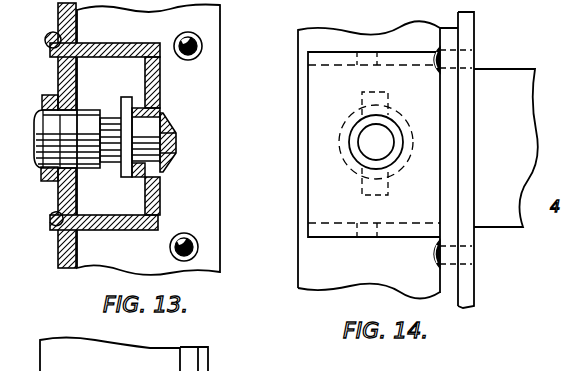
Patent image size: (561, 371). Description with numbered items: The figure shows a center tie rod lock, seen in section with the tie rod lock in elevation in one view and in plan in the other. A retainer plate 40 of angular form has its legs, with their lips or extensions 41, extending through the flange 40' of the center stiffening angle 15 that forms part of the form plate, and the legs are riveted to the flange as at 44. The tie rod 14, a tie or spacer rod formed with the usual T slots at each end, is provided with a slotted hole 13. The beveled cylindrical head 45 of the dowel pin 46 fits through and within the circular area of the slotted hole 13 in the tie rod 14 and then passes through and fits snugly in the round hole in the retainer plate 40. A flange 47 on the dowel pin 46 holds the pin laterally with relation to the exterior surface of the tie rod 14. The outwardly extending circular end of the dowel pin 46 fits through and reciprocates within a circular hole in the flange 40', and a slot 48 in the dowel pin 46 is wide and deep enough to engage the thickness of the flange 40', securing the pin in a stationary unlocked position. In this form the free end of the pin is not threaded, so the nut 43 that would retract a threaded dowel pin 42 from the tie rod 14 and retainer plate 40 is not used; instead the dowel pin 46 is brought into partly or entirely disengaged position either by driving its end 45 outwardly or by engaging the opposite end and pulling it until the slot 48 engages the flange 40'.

In FIG. 13, the slotted hole 13 is at (158, 170).
In FIG. 13, the tie rod 14 is at (157, 201).
In FIG. 14, the tie rod 14 is at (505, 211).
In FIG. 13, the angle 15 is at (53, 253).
In FIG. 13, the retainer plate 40 is at (199, 136).
In FIG. 14, the retainer plate 40 is at (345, 144).
In FIG. 13, the flange 40' is at (39, 56).
In FIG. 14, the flange 40' is at (346, 159).
In FIG. 13, the lips or extensions 41 is at (54, 50).
In FIG. 14, the lips or extensions 41 is at (374, 48).
In FIG. 13, the dowel pin 42 is at (143, 125).
In FIG. 14, the dowel pin 42 is at (377, 141).
In FIG. 13, the nut 43 is at (52, 180).
In FIG. 13, the rivet 44 is at (52, 40).
In FIG. 13, the beveled cylindrical head 45 is at (173, 144).
In FIG. 13, the dowel pin 46 is at (89, 168).
In FIG. 13, the flange 47 is at (123, 101).
In FIG. 13, the slot 48 is at (110, 128).